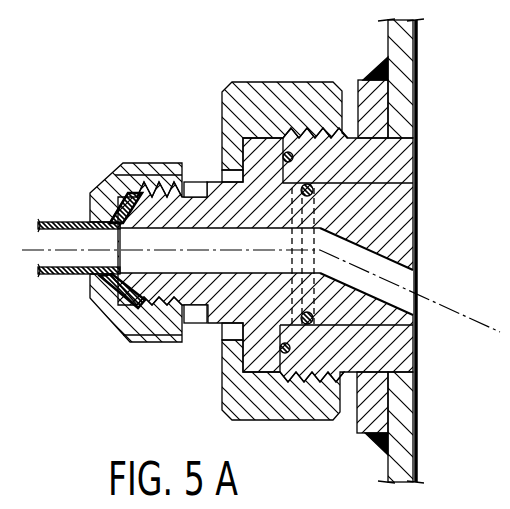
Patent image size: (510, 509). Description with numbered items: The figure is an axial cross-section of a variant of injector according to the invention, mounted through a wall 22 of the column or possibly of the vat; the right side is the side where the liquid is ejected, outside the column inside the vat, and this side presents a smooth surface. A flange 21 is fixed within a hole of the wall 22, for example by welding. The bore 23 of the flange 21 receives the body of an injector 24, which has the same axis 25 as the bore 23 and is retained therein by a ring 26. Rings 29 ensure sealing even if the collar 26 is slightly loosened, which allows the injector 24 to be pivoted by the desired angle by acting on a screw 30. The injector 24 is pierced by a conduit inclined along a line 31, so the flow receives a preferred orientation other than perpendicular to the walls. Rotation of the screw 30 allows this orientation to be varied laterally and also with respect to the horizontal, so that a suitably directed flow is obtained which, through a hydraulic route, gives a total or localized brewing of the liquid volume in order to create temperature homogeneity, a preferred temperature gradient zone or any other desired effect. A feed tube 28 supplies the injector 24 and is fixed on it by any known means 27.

The flange 21 is at (370, 93).
The wall 22 is at (402, 63).
The bore 23 is at (375, 190).
The injector 24 is at (378, 312).
The axis 25 is at (430, 256).
The ring 26 is at (327, 398).
The fixing means 27 is at (103, 317).
The feed tube 28 is at (63, 275).
The rings 29 is at (281, 350).
The screw 30 is at (197, 325).
The inclined line 31 is at (441, 305).